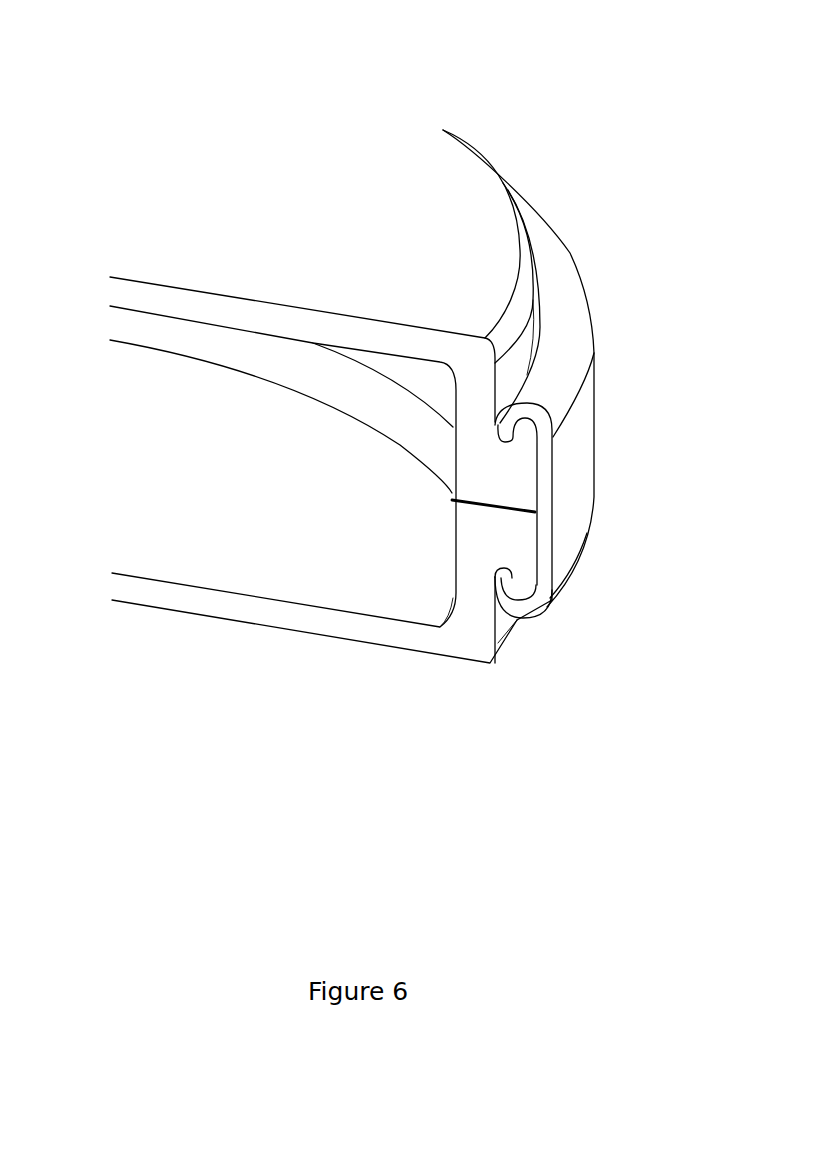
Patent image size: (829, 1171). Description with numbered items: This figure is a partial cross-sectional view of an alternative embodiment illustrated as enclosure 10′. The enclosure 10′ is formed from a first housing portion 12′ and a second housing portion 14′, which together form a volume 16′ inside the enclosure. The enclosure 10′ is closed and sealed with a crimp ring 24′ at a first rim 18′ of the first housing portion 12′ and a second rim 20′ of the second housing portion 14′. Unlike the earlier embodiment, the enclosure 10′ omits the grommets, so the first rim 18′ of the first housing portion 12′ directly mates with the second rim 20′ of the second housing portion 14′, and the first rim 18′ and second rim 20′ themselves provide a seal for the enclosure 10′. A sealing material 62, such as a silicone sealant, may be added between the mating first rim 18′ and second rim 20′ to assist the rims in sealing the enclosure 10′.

The enclosure 10′ is at (212, 170).
The first housing portion 12′ is at (380, 193).
The second housing portion 14′ is at (305, 635).
The volume 16′ is at (150, 478).
The first rim 18′ is at (500, 505).
The second rim 20′ is at (513, 510).
The crimp ring 24′ is at (578, 272).
The sealing material 62 is at (452, 500).